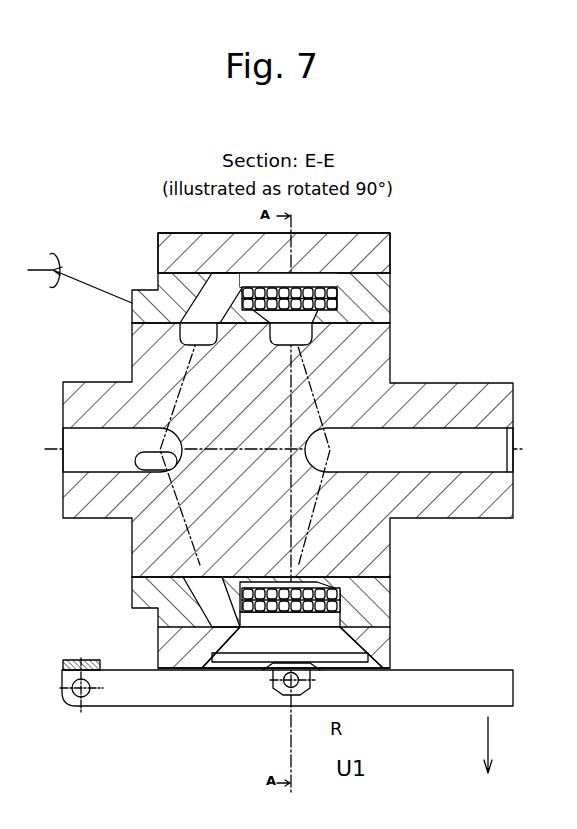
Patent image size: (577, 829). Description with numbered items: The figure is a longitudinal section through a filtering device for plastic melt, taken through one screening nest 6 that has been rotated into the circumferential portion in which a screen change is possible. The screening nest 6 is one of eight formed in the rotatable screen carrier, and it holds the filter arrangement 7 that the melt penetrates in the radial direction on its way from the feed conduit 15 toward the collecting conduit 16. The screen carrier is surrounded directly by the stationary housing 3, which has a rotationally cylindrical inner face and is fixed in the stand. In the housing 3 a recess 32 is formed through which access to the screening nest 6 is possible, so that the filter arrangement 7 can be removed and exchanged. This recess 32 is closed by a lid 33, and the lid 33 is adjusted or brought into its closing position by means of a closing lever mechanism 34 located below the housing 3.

The housing 3 is at (163, 656).
The screening nest 6 is at (330, 618).
The filter arrangement 7 is at (345, 598).
The feed conduit 15 is at (387, 284).
The collecting conduit 16 is at (327, 572).
The recess 32 is at (393, 667).
The lid 33 is at (237, 643).
The closing lever mechanism 34 is at (487, 683).